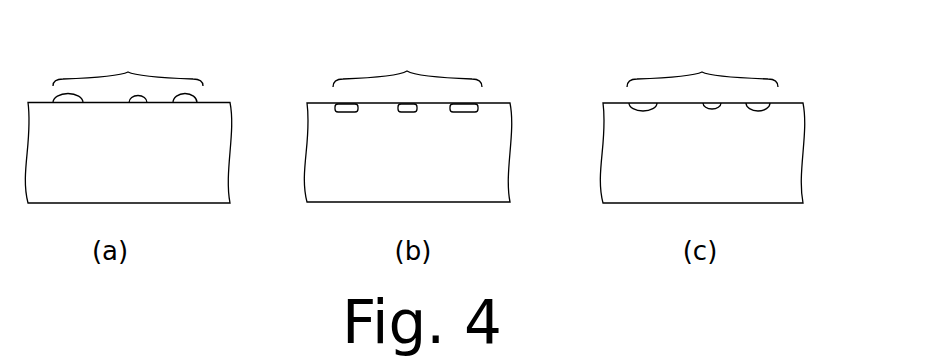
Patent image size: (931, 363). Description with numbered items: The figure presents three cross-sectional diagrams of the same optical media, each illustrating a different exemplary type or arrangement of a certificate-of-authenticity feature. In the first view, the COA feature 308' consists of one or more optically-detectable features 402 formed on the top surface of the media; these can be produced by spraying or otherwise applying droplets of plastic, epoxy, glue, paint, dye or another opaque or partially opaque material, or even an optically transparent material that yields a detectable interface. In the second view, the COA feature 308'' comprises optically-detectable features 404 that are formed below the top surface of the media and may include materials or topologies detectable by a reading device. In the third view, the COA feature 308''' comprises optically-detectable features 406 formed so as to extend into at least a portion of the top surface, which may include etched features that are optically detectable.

The COA feature 308' is at (128, 52).
The COA feature 308'' is at (407, 52).
The COA feature 308''' is at (702, 52).
The optically-detectable features 402 is at (186, 98).
The optically-detectable features 404 is at (463, 108).
The optically-detectable features 406 is at (762, 107).